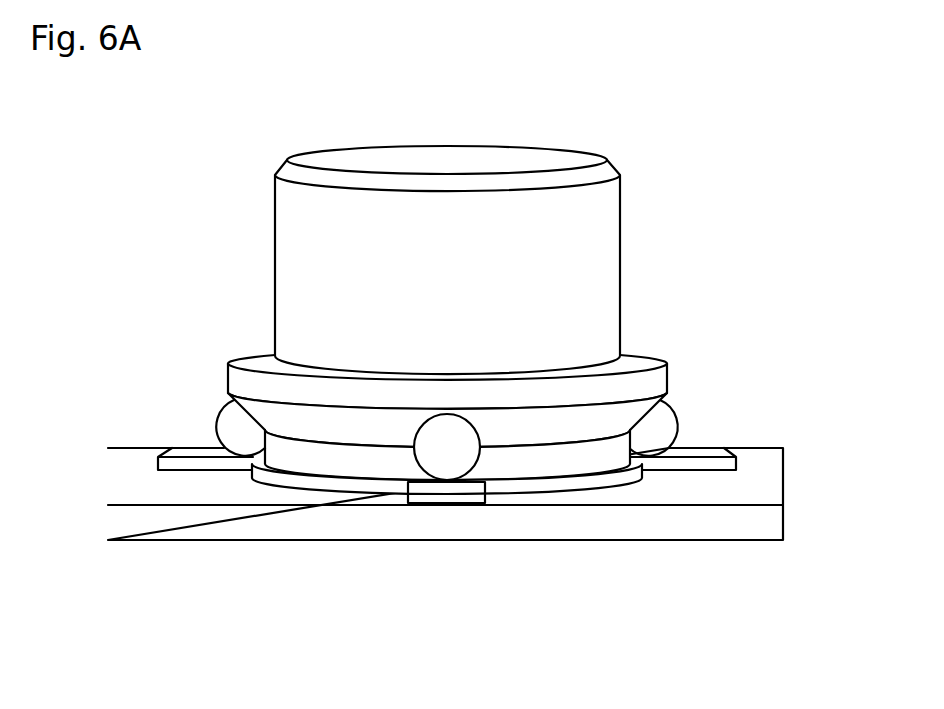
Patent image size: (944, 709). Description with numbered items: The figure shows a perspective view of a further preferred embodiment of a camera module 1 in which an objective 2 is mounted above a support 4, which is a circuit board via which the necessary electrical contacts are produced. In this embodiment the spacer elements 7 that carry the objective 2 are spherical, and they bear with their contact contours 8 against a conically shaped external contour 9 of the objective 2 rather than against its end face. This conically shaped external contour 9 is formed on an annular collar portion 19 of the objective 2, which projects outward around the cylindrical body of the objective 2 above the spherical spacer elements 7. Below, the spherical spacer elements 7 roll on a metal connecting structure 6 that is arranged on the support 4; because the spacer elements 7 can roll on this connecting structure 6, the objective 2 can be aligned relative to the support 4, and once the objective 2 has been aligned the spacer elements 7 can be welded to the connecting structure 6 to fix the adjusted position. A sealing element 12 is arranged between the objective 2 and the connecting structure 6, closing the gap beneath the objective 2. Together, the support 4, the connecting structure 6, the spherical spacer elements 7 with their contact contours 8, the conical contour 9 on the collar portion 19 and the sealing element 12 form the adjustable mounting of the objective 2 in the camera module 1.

The camera module 1 is at (724, 139).
The objective 2 is at (462, 158).
The support 4 is at (257, 515).
The connecting structure 6 is at (429, 500).
The spacer elements 7 is at (230, 413).
The contact contours 8 is at (662, 416).
The conically shaped external contour 9 is at (303, 442).
The sealing element 12 is at (377, 466).
The annular collar portion 19 is at (653, 380).